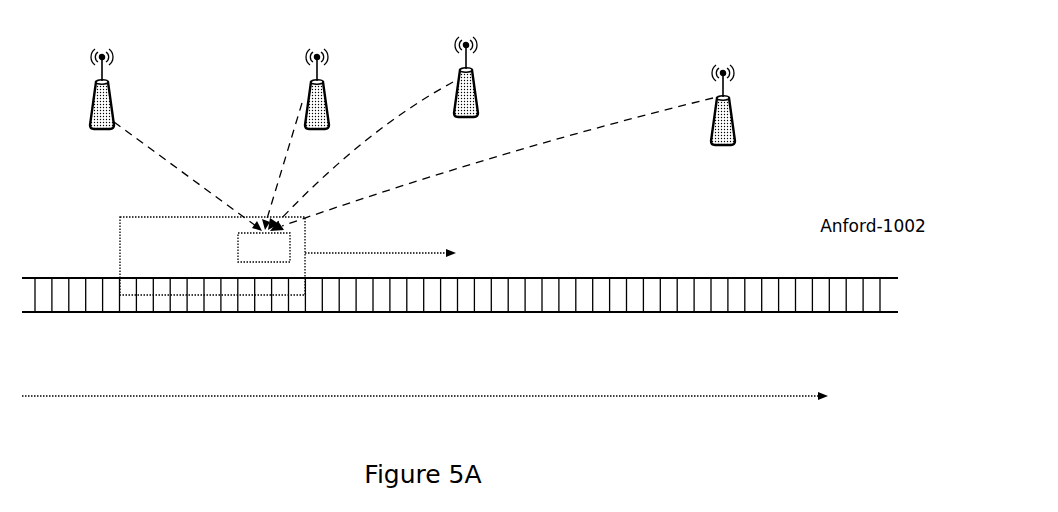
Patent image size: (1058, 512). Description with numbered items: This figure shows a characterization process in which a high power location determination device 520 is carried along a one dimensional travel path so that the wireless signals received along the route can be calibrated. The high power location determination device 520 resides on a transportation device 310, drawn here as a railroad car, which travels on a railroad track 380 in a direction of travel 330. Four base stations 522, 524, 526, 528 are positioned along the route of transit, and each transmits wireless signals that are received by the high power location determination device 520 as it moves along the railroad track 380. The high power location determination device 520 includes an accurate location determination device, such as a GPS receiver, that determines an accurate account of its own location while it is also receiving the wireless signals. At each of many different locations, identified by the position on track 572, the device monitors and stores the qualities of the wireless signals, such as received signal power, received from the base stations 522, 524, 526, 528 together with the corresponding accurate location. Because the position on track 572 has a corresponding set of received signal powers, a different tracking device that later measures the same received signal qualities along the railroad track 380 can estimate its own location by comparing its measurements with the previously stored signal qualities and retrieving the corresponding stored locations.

The base station 522 is at (147, 90).
The base station 524 is at (275, 83).
The base station 526 is at (510, 77).
The base station 528 is at (688, 84).
The transportation device 310 is at (212, 256).
The high power location determination device 520 is at (262, 266).
The direction of travel 330 is at (416, 245).
The railroad track 380 is at (627, 297).
The position on track 572 is at (425, 414).